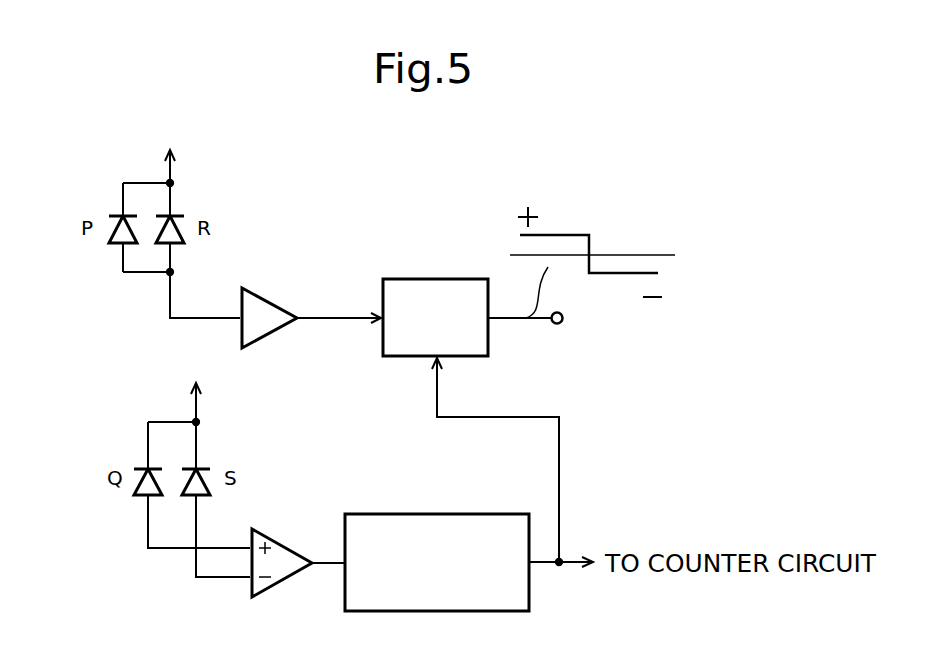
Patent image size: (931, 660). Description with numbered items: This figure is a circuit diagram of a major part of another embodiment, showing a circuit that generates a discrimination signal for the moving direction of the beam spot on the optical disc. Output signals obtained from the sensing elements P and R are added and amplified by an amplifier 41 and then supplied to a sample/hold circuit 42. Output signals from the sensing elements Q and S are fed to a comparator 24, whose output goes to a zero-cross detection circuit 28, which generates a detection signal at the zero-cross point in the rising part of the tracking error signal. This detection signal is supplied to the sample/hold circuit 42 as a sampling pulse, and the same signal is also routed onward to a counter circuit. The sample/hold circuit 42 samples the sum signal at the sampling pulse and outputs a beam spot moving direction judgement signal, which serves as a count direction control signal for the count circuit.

The amplifier 41 is at (273, 298).
The sample/hold circuit 42 is at (440, 279).
The comparator 24 is at (290, 545).
The zero-cross detection circuit 28 is at (440, 514).